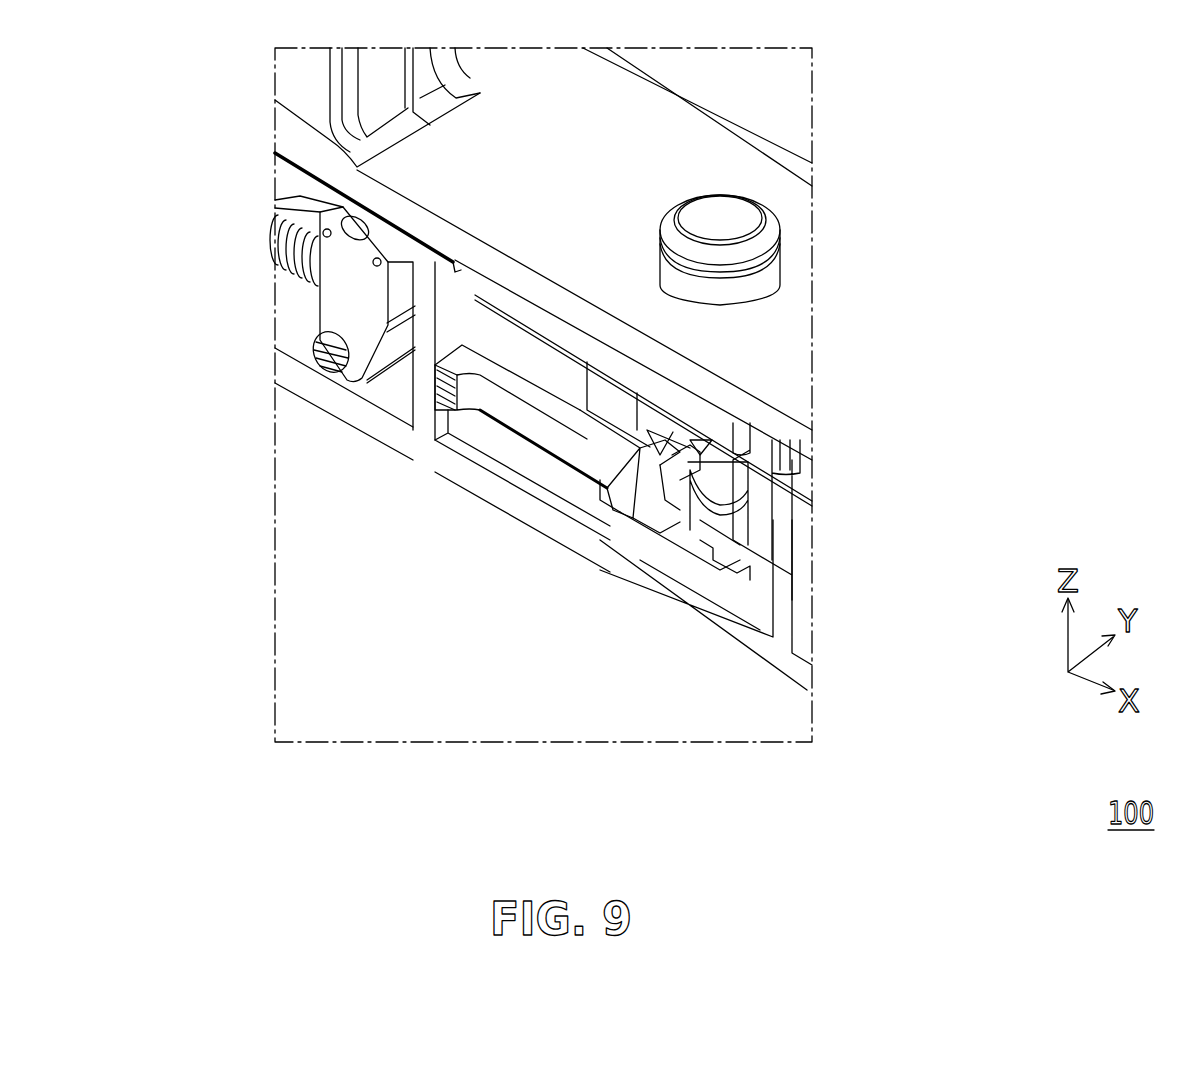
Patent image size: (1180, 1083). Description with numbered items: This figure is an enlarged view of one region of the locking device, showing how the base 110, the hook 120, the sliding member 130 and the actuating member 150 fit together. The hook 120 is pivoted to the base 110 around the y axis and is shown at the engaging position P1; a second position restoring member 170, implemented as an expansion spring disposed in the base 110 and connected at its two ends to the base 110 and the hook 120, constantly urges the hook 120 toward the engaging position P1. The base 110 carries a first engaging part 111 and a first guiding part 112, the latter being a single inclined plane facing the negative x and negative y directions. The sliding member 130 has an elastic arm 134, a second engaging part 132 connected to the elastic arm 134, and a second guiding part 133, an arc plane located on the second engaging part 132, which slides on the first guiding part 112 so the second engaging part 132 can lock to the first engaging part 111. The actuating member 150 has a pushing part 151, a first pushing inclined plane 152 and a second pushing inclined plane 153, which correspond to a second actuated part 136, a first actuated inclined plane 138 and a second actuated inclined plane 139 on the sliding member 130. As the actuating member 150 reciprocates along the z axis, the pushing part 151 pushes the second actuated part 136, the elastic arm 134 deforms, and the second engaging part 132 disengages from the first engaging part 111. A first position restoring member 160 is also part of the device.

The base 110 is at (655, 125).
The first engaging part 111 is at (730, 555).
The first guiding part 112 is at (680, 545).
The hook 120 is at (368, 97).
The sliding member 130 is at (477, 443).
The second engaging part 132 is at (622, 500).
The second guiding part 133 is at (645, 512).
The elastic arm 134 is at (517, 427).
The second actuated part 136 is at (660, 492).
The first actuated inclined plane 138 is at (690, 425).
The second actuated inclined plane 139 is at (667, 497).
The actuating member 150 is at (720, 208).
The pushing part 151 is at (722, 463).
The first pushing inclined plane 152 is at (672, 462).
The second pushing inclined plane 153 is at (696, 410).
The first position restoring member 160 is at (760, 540).
The second position restoring member 170 is at (293, 262).
The engaging position P1 is at (370, 392).